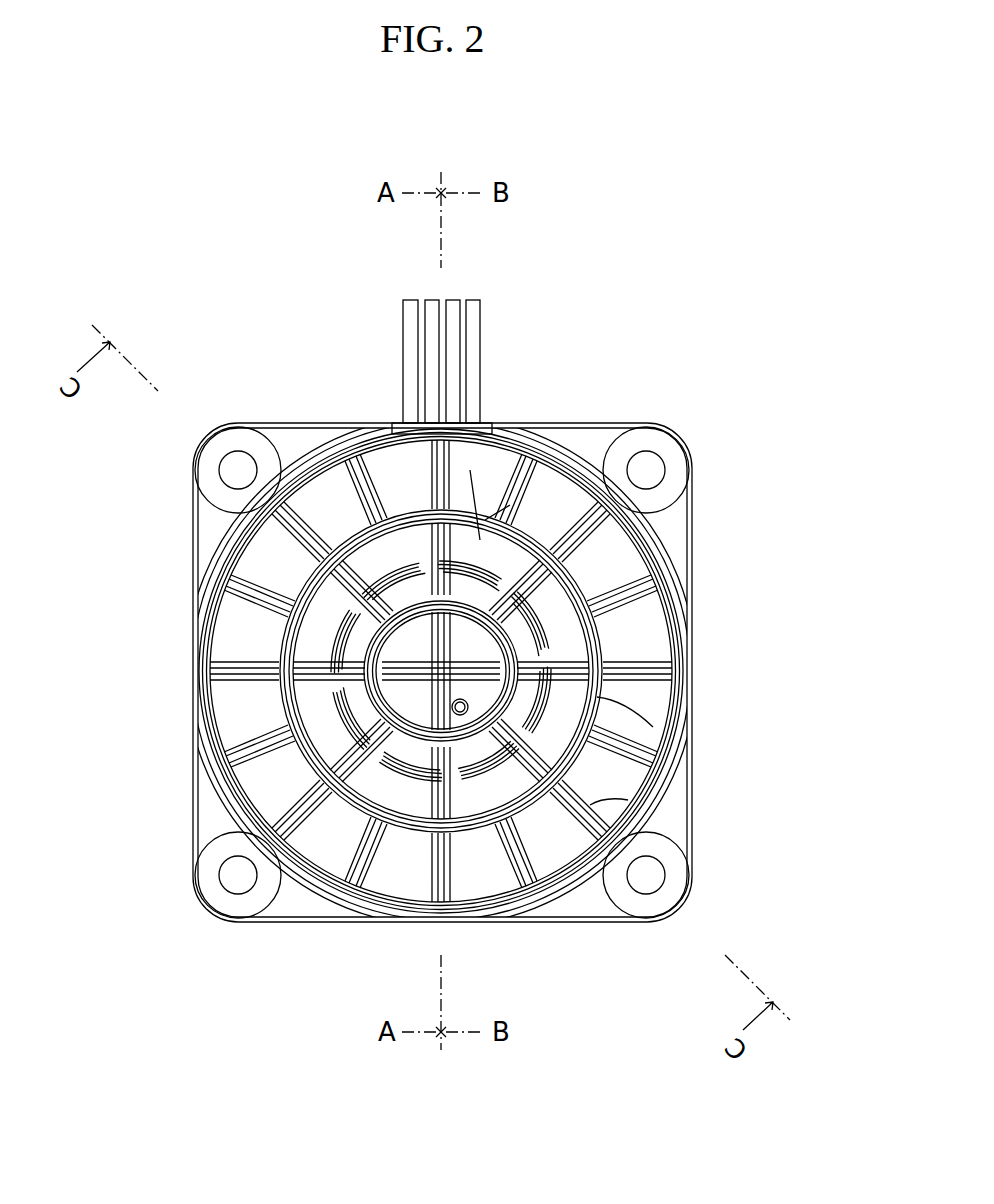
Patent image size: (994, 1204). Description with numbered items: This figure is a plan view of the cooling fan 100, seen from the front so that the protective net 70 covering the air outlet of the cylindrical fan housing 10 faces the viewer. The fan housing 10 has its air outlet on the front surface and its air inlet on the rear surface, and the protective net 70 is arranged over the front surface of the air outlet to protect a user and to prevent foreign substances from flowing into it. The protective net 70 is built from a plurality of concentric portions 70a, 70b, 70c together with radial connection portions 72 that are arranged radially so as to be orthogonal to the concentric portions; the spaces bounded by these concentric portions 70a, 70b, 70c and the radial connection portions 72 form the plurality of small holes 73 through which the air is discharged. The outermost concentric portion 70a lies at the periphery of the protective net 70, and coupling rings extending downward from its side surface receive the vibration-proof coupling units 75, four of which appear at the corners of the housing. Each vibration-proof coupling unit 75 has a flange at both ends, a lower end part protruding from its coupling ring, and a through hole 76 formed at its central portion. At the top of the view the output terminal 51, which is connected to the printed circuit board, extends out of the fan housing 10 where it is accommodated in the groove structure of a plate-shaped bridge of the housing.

The cooling fan 100 is at (702, 337).
The fan housing 10 is at (696, 533).
The output terminal 51 is at (477, 333).
The protective net 70 is at (693, 611).
The outermost concentric portion 70a is at (686, 651).
The concentric portion 70b is at (570, 708).
The concentric portion 70c is at (683, 782).
The radial connection portion 72 is at (628, 800).
The small hole 73 is at (492, 873).
The vibration-proof coupling unit 75 is at (683, 465).
The through hole 76 is at (652, 462).